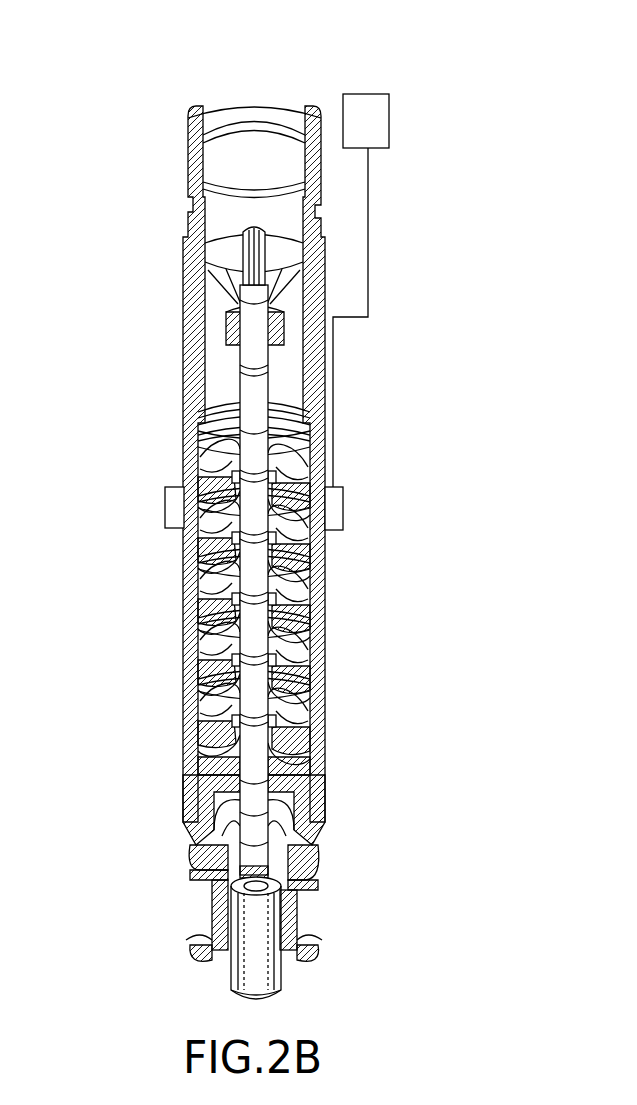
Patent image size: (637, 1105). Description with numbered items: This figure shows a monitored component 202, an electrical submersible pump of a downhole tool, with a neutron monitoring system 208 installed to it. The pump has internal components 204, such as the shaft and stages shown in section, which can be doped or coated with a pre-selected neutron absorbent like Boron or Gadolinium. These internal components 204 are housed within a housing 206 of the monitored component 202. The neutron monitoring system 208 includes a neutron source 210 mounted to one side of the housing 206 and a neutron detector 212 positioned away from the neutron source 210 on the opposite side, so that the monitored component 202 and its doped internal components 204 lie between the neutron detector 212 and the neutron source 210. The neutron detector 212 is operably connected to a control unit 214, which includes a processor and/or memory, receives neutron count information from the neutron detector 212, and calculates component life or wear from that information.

The monitored component 202 is at (172, 192).
The internal components 204 is at (286, 386).
The housing 206 is at (184, 343).
The neutron monitoring system 208 is at (148, 508).
The neutron source 210 is at (173, 487).
The neutron detector 212 is at (334, 506).
The control unit 214 is at (366, 92).